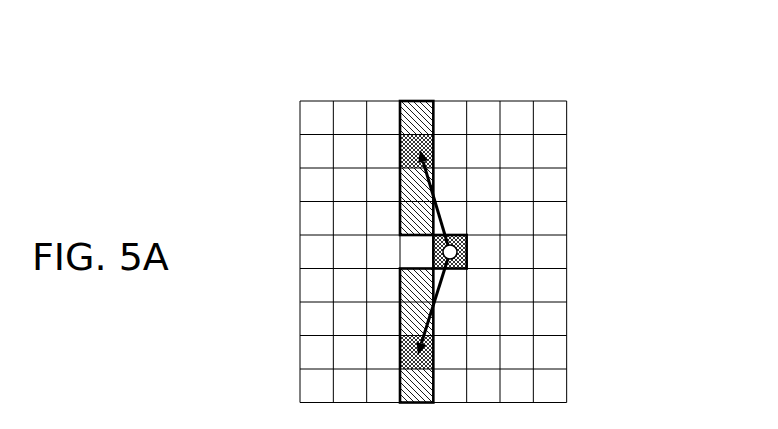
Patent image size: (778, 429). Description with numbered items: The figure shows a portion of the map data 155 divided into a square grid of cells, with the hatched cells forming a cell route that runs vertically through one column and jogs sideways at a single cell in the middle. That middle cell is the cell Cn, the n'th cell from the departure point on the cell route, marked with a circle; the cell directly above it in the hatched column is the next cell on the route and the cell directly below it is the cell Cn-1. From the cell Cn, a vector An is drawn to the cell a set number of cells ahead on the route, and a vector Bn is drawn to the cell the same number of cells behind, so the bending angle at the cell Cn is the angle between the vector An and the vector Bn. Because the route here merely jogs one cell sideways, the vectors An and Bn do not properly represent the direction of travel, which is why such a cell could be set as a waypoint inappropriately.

The map data 155 is at (442, 252).
The vector A_n An is at (433, 180).
The vector B_n Bn is at (433, 318).
The cell C_n Cn is at (458, 248).
The cell C_n-1 Cn-1 is at (400, 290).